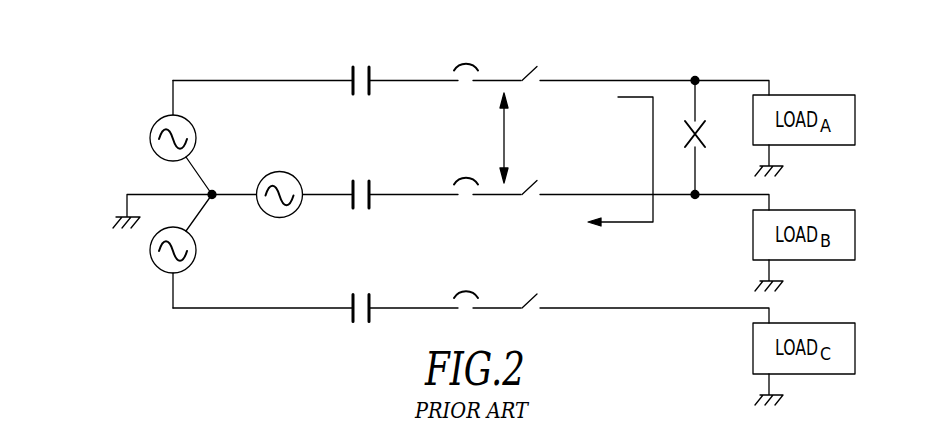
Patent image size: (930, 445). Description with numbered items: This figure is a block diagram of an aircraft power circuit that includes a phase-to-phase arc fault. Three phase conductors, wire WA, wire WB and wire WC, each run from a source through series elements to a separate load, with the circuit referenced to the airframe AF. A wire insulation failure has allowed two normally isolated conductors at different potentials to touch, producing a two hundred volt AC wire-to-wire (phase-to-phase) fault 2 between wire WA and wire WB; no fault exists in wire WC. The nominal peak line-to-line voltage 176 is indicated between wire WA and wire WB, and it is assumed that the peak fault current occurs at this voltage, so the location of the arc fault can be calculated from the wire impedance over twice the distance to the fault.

The nominal peak line-to-line voltage Vpll 176 is at (503, 140).
The wire-to-wire (phase-to-phase) fault 2 is at (703, 131).
The wire WA is at (471, 66).
The wire WB is at (490, 177).
The wire WC is at (471, 294).
The airframe AF is at (148, 213).